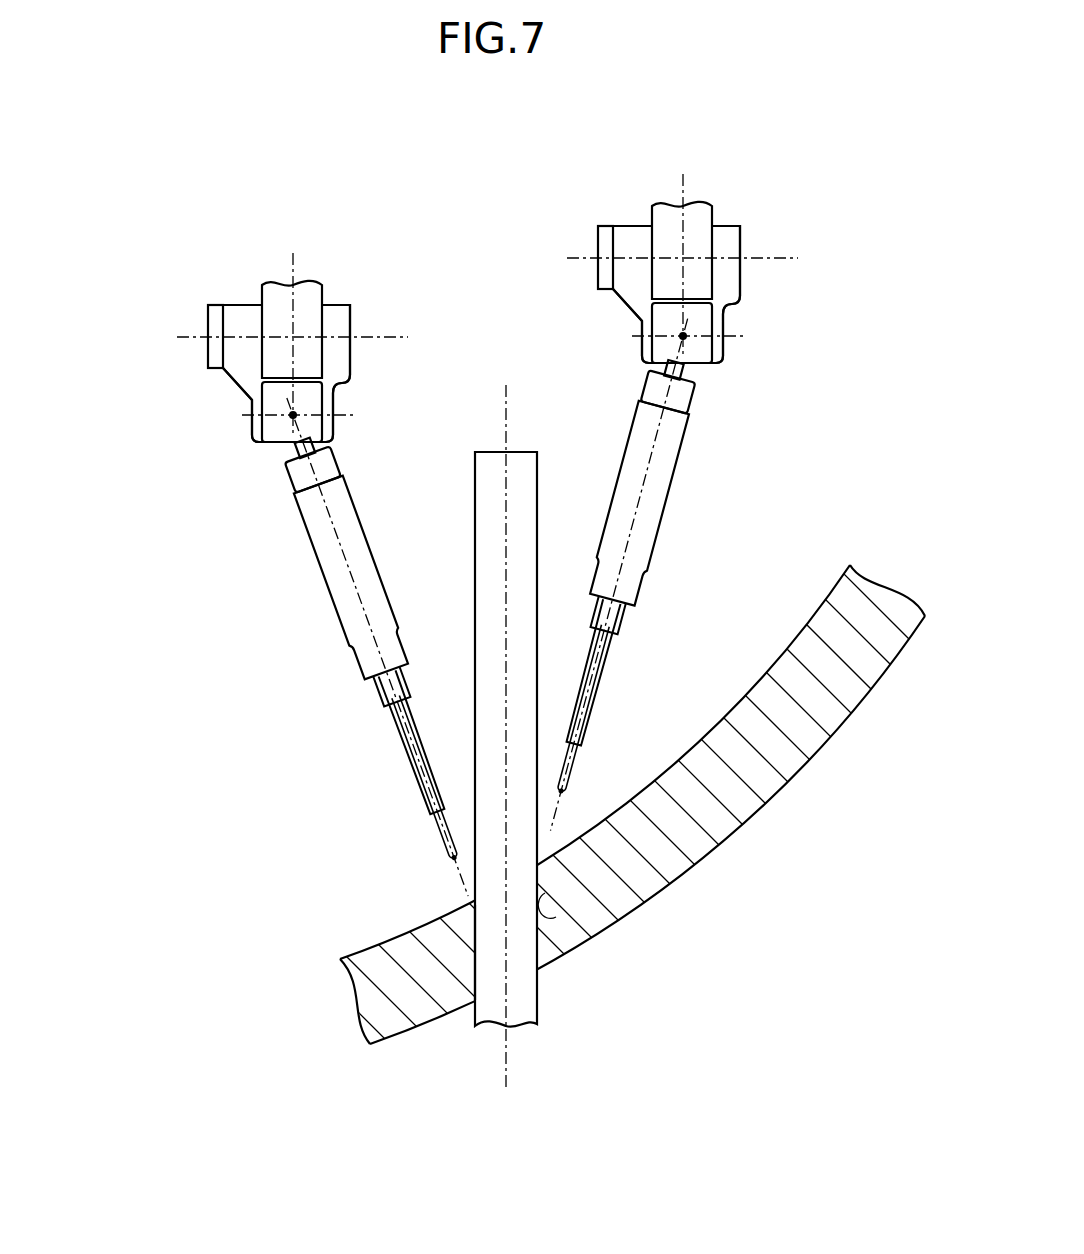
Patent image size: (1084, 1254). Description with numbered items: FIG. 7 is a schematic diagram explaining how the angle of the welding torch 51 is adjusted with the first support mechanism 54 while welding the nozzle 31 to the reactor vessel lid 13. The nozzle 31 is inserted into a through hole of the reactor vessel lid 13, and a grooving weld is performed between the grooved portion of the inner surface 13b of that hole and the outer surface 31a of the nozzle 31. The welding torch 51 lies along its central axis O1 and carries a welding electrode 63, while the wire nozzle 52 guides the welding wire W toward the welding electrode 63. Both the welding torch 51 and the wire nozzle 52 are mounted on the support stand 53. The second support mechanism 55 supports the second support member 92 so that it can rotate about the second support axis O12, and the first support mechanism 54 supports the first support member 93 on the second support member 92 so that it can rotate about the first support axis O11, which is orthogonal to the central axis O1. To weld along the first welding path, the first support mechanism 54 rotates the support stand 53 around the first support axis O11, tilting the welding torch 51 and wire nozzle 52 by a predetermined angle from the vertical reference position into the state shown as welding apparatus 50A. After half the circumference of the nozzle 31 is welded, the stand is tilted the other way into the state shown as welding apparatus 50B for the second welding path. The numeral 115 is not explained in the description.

The reactor vessel lid 13 is at (816, 574).
The inner surface 13b is at (556, 917).
The nozzle 31 is at (474, 488).
The outer surface 31a is at (473, 950).
The welding apparatus 50A is at (800, 282).
The welding apparatus 50B is at (178, 358).
The welding torch 51 is at (377, 690).
The wire nozzle 52 is at (399, 724).
The support stand 53 is at (294, 511).
The first support mechanism 54 is at (334, 430).
The second support mechanism 55 is at (348, 298).
The welding electrode 63 is at (455, 865).
The second support member 92 is at (216, 315).
The first support member 93 is at (283, 455).
The arm 115 is at (283, 292).
The central axis O1 is at (352, 598).
The first support axis O11 is at (293, 415).
The second support axis O12 is at (385, 331).
The welding wire W is at (452, 859).